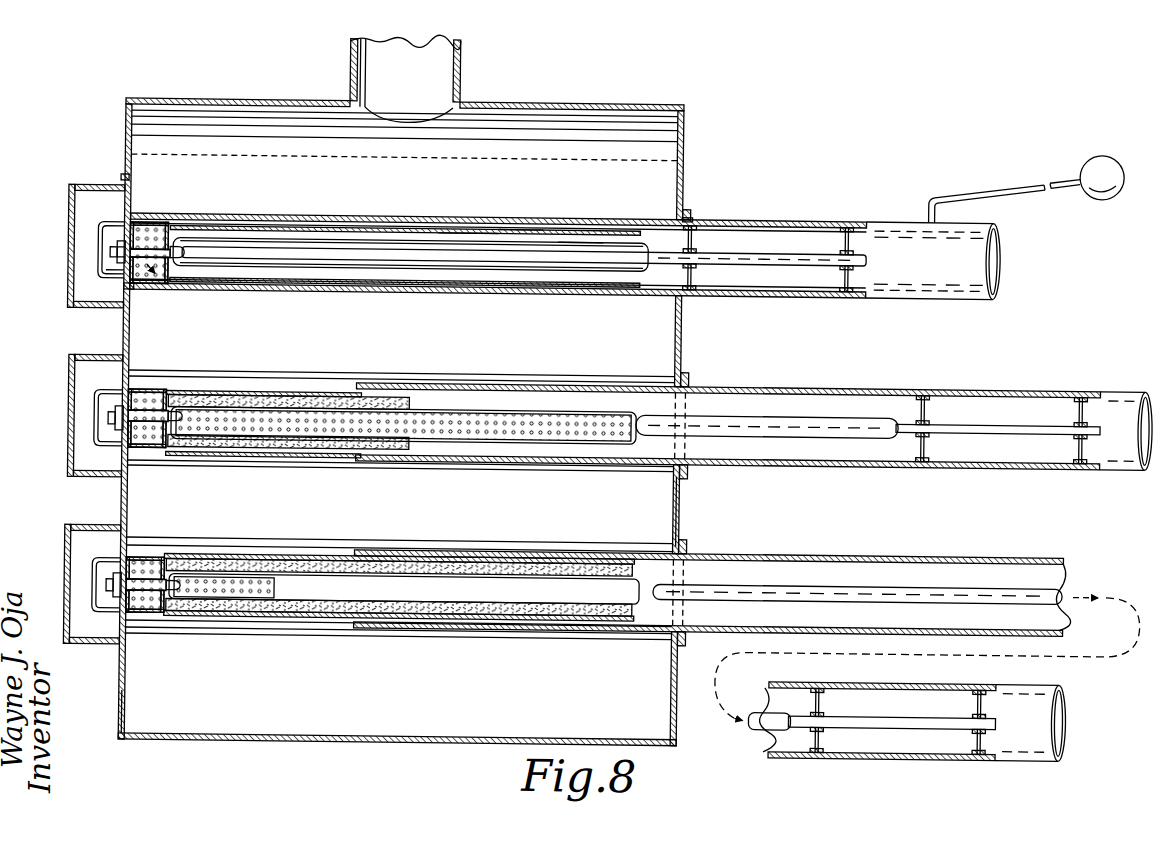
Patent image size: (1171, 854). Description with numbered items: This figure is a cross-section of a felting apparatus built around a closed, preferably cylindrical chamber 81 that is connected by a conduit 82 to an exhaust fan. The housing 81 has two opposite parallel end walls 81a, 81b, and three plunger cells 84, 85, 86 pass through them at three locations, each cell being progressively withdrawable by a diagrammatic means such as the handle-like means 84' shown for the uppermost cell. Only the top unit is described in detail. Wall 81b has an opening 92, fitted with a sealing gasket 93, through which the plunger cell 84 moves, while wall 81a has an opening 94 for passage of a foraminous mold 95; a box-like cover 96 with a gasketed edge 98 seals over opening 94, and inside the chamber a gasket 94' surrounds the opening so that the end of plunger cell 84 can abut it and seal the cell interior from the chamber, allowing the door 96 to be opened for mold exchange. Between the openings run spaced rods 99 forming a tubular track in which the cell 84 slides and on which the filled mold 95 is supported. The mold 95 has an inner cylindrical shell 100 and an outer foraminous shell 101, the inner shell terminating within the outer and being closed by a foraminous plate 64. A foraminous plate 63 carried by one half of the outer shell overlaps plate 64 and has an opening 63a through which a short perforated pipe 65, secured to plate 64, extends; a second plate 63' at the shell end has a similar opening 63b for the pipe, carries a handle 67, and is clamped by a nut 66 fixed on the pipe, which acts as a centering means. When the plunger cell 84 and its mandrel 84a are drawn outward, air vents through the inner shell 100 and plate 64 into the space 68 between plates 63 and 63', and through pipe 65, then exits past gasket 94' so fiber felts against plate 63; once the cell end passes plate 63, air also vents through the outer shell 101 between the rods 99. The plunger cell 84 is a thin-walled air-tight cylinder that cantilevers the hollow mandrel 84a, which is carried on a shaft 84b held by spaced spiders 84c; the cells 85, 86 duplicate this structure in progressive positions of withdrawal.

The foraminous plate 63 is at (171, 293).
The second foraminous plate 63' is at (70, 245).
The opening 63a is at (164, 238).
The opening 63b is at (145, 240).
The foraminous plate 64 is at (180, 250).
The pipe 65 is at (149, 288).
The nut 66 is at (119, 258).
The handle 67 is at (108, 222).
The space 68 is at (160, 281).
The closed chamber 81 is at (202, 98).
The end wall 81a is at (126, 700).
The end wall 81b is at (684, 504).
The conduit 82 is at (461, 74).
The plunger cell 84 is at (565, 234).
The withdrawing means 84' is at (1027, 174).
The mandrel 84a is at (412, 237).
The shaft 84b is at (795, 247).
The spiders 84c is at (695, 276).
The plunger cell 85 is at (790, 380).
The plunger cell 86 is at (797, 547).
The opening 92 is at (701, 212).
The sealing gasket 93 is at (691, 206).
The opening 94 is at (70, 284).
The gasket 94' is at (143, 320).
The foraminous mold 95 is at (468, 272).
The box-like cover 96 is at (70, 226).
The gasketed edge 98 is at (124, 176).
The rods 99 is at (272, 225).
The inner cylindrical shell 100 is at (580, 238).
The outer foraminous shell 101 is at (521, 225).